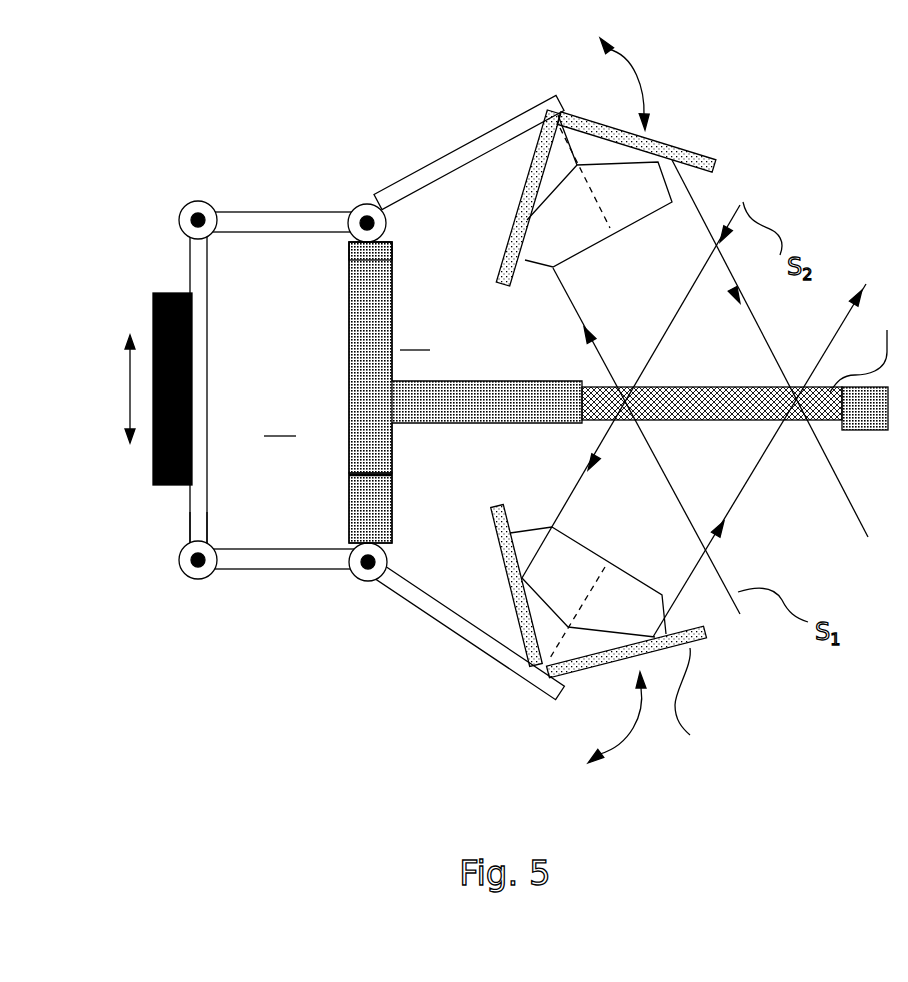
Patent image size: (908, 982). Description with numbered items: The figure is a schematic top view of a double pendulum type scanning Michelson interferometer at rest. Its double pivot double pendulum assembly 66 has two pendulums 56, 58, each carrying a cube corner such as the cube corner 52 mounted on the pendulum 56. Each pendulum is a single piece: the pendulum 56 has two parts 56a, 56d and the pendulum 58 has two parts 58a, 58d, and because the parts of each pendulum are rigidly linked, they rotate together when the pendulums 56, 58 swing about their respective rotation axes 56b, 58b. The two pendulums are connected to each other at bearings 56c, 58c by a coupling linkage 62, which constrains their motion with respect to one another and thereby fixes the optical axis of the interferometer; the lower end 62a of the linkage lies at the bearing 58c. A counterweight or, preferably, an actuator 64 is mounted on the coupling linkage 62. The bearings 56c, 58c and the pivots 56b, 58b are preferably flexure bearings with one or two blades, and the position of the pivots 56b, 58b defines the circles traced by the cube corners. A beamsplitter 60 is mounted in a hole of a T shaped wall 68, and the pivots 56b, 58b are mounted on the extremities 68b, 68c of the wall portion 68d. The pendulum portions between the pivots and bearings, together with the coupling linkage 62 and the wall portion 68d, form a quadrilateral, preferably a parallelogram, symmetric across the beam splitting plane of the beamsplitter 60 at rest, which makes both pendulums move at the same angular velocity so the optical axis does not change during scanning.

The cube corner 52 is at (668, 148).
The pendulum 56 is at (322, 149).
The pendulum part 56a is at (278, 212).
The pivot axis 56b is at (358, 208).
The bearing 56c is at (193, 207).
The pendulum part 56d is at (487, 137).
The pendulum 58 is at (335, 640).
The pendulum part 58a is at (272, 570).
The pivot axis 58b is at (360, 579).
The bearing 58c is at (197, 578).
The pendulum part 58d is at (430, 625).
The beamsplitter 60 is at (700, 421).
The coupling linkage 62 is at (193, 276).
The lower end of vertical link 62a is at (188, 528).
The actuator 64 is at (153, 470).
The double pivot double pendulum assembly 66 is at (280, 423).
The T shaped wall 68 is at (408, 392).
The extremity of wall portion 68b is at (349, 247).
The extremity of wall portion 68c is at (349, 543).
The wall portion 68d is at (347, 348).